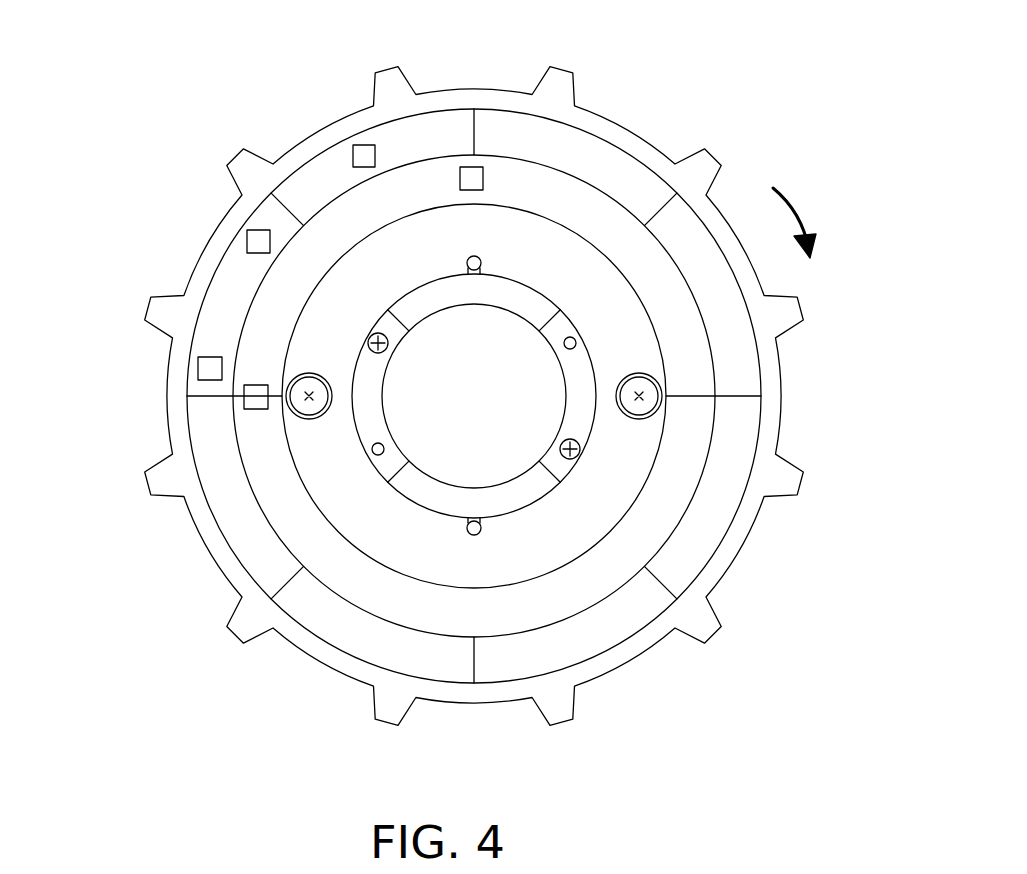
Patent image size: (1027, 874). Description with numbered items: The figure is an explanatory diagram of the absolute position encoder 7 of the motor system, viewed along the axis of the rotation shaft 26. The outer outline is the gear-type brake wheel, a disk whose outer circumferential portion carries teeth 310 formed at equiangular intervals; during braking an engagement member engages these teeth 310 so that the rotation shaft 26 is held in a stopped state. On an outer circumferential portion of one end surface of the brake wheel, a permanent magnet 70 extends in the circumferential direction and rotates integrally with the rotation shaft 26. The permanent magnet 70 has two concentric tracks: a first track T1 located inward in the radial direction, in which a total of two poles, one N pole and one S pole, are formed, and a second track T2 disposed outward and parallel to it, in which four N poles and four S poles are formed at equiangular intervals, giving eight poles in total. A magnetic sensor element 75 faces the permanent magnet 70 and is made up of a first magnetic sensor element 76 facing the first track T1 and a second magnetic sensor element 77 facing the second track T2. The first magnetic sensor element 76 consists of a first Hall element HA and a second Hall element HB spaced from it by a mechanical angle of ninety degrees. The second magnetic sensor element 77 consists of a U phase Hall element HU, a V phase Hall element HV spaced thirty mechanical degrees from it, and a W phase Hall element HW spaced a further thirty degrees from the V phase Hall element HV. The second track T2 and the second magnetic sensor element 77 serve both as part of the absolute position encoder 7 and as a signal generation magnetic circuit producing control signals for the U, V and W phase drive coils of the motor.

The absolute position encoder 7 is at (438, 402).
The teeth 310 is at (565, 72).
The permanent magnet 70 is at (745, 520).
The rotation shaft 26 is at (517, 488).
The magnetic sensor element 75 is at (284, 289).
The first magnetic sensor element 76 is at (284, 298).
The second magnetic sensor element 77 is at (210, 195).
The U phase Hall element HU is at (367, 147).
The V phase Hall element HV is at (257, 238).
The W phase Hall element HW is at (205, 372).
The first Hall element HA is at (466, 173).
The second Hall element HB is at (248, 400).
The first track T1 is at (434, 622).
The second track T2 is at (497, 672).